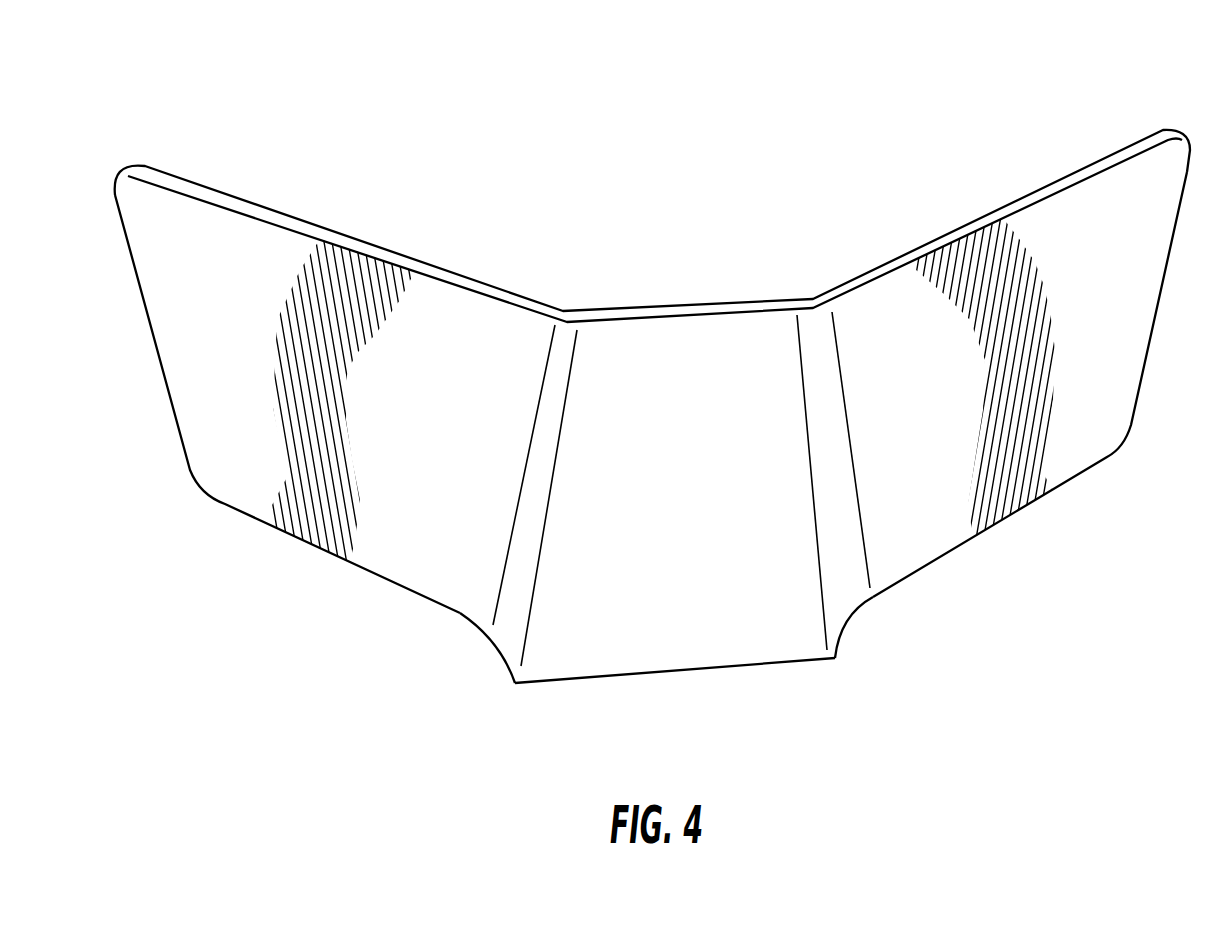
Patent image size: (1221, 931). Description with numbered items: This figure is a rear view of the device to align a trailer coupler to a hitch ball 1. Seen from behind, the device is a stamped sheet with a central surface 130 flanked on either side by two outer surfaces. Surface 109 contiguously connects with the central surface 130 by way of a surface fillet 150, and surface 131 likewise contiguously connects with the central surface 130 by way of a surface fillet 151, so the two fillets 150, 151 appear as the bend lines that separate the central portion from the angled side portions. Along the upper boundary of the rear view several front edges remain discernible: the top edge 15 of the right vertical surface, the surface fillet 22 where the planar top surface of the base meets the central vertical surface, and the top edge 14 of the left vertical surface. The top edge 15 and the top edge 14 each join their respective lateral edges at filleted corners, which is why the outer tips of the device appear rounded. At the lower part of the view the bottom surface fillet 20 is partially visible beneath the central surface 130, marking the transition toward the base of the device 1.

The device to align a trailer coupler to a hitch ball 1 is at (354, 99).
The surface 109 is at (253, 358).
The surface 131 is at (1043, 283).
The surface 130 is at (681, 440).
The surface fillet 150 is at (552, 410).
The surface fillet 151 is at (815, 365).
The top edge of the right vertical surface 15 is at (400, 262).
The top edge of the left vertical surface 14 is at (965, 233).
The surface fillet 22 is at (668, 308).
The bottom surface fillet 20 is at (628, 663).